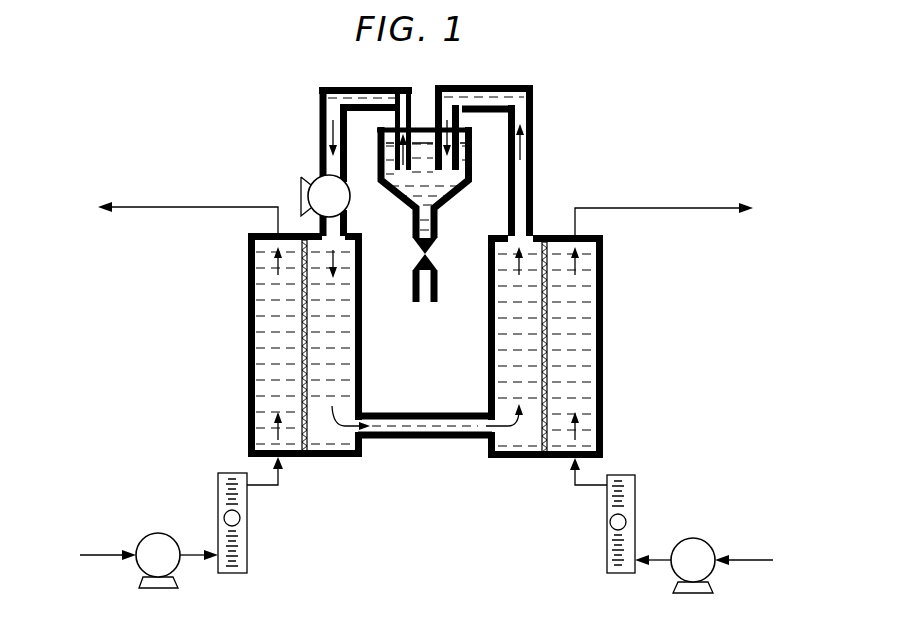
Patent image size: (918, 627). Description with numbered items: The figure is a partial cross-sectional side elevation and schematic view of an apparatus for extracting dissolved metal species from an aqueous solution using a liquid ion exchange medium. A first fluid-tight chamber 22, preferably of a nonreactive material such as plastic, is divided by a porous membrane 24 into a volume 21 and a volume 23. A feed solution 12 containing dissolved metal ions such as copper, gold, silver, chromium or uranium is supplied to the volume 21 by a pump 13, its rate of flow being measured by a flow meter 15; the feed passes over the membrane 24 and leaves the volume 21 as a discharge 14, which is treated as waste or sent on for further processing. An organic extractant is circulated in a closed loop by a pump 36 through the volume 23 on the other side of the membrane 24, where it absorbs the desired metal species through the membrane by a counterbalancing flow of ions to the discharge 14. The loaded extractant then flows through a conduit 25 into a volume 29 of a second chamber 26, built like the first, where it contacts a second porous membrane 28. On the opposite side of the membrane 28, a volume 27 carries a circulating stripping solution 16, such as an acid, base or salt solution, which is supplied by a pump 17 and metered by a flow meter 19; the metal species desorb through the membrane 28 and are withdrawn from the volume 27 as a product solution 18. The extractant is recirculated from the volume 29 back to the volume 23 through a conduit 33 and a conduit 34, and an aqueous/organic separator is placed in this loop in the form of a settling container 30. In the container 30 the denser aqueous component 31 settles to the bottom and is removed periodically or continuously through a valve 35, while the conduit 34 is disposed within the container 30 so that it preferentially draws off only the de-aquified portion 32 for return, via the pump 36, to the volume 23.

The feed solution 12 is at (98, 555).
The pump 13 is at (162, 533).
The discharge 14 is at (187, 208).
The flow meter 15 is at (247, 510).
The stripping solution 16 is at (753, 560).
The pump 17 is at (693, 538).
The product solution 18 is at (672, 208).
The flow meter 19 is at (607, 518).
The volume 21 is at (288, 378).
The first fluid-tight chamber 22 is at (248, 352).
The volume 23 is at (343, 378).
The membrane 24 is at (302, 320).
The conduit 25 is at (431, 412).
The second dialysis cell 26 is at (603, 345).
The volume 27 is at (584, 375).
The second porous membrane 28 is at (548, 327).
The volume 29 is at (531, 375).
The settling container 30 is at (472, 168).
The aqueous component 31 is at (428, 187).
The de-aquified portion 32 is at (384, 158).
The conduit 33 is at (533, 127).
The conduit 34 is at (320, 115).
The valve 35 is at (430, 247).
The pump 36 is at (350, 200).